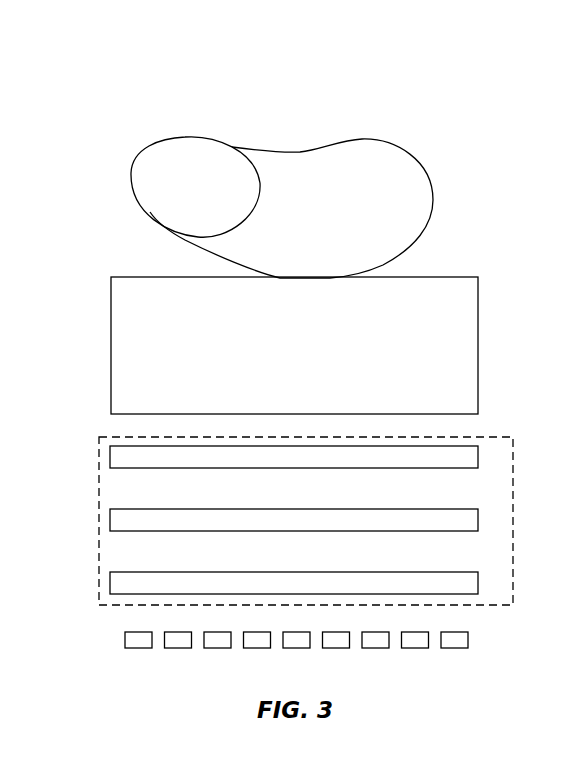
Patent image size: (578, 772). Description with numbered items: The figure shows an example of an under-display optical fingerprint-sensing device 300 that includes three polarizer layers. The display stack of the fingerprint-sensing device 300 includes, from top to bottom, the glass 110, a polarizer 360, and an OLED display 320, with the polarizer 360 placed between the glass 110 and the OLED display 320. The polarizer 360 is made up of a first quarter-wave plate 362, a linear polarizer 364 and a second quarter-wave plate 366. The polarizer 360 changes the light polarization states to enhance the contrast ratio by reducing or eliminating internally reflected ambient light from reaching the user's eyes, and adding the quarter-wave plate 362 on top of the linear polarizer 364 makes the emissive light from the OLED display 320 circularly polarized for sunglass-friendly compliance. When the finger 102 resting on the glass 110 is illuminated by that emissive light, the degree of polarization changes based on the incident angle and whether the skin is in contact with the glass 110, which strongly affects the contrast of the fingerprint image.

The under-display optical fingerprint-sensing device 300 is at (78, 110).
The finger 102 is at (295, 217).
The glass 110 is at (280, 358).
The polarizer 360 is at (97, 505).
The first quarter-wave plate 362 is at (481, 459).
The linear polarizer 364 is at (481, 522).
The second quarter-wave plate 366 is at (481, 586).
The OLED display 320 is at (478, 640).